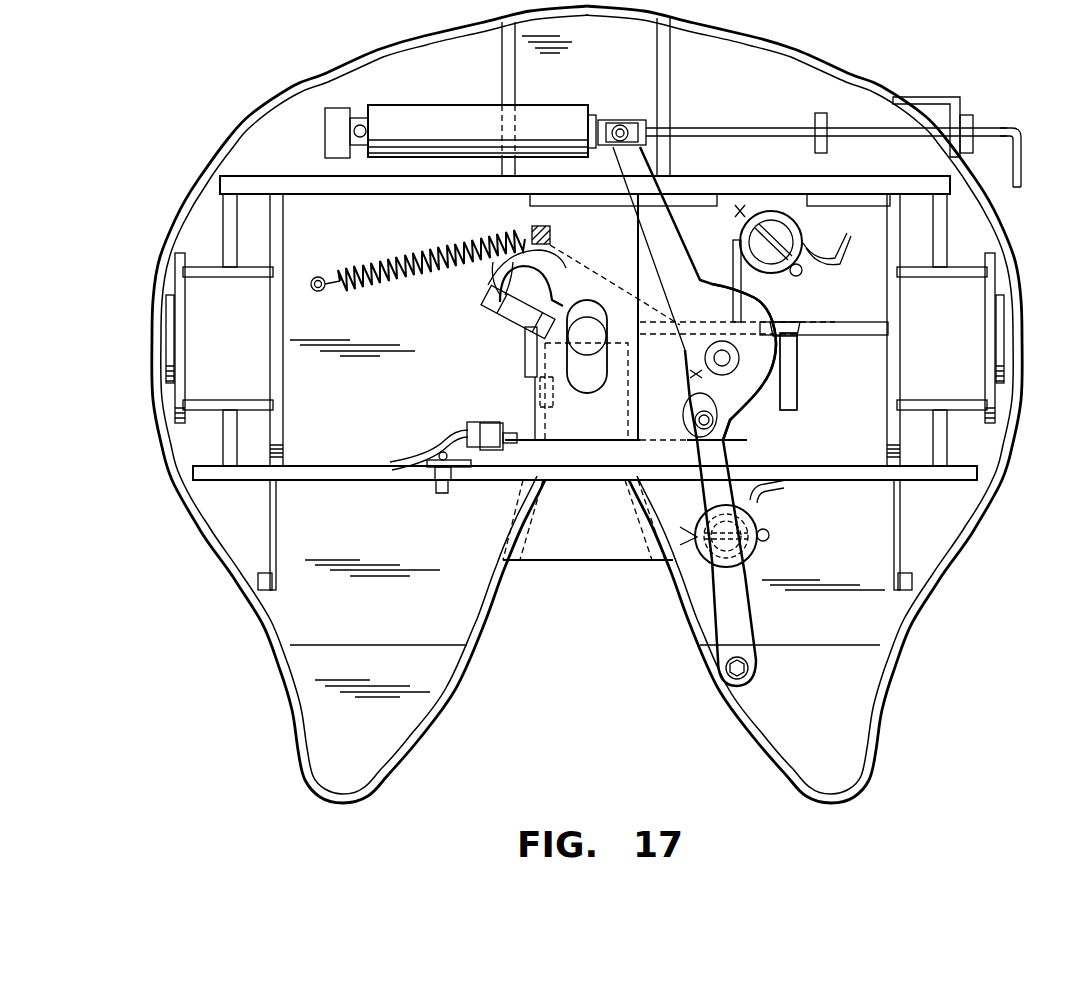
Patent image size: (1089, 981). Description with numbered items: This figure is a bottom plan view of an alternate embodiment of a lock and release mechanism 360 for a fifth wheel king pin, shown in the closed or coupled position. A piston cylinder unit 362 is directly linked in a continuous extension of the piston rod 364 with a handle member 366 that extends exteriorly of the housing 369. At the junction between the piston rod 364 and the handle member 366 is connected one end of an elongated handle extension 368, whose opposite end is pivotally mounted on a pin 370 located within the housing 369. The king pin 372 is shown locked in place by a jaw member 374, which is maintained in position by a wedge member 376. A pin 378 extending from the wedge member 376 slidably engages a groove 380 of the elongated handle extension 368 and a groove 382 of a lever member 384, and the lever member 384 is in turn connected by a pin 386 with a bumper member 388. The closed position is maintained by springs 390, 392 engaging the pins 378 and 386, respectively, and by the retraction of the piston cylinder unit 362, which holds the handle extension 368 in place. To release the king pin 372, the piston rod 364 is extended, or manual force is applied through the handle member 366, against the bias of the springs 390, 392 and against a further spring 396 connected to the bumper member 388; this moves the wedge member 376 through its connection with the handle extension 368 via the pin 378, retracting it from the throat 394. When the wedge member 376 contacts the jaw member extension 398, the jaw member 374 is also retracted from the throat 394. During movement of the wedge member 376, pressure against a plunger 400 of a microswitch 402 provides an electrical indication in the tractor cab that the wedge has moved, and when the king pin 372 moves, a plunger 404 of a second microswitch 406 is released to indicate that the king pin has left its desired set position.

The lock and release mechanism 360 is at (885, 62).
The piston cylinder unit 362 is at (435, 115).
The piston rod 364 is at (636, 118).
The handle member 366 is at (727, 128).
The elongated handle extension 368 is at (665, 236).
The housing 369 is at (1005, 230).
The pin 370 is at (748, 668).
The king pin 372 is at (580, 347).
The jaw member 374 is at (543, 393).
The wedge member 376 is at (652, 455).
The pin 378 is at (720, 425).
The groove 380 is at (687, 397).
The groove 382 is at (780, 395).
The lever member 384 is at (790, 330).
The pin 386 is at (752, 310).
The bumper member 388 is at (590, 272).
The spring 390 is at (707, 282).
The spring 392 is at (655, 455).
The throat 394 is at (581, 562).
The spring 396 is at (386, 258).
The jaw member extension 398 is at (790, 365).
The plunger 400 is at (497, 457).
The microswitch 402 is at (470, 478).
The plunger 404 is at (528, 333).
The microswitch 406 is at (480, 308).